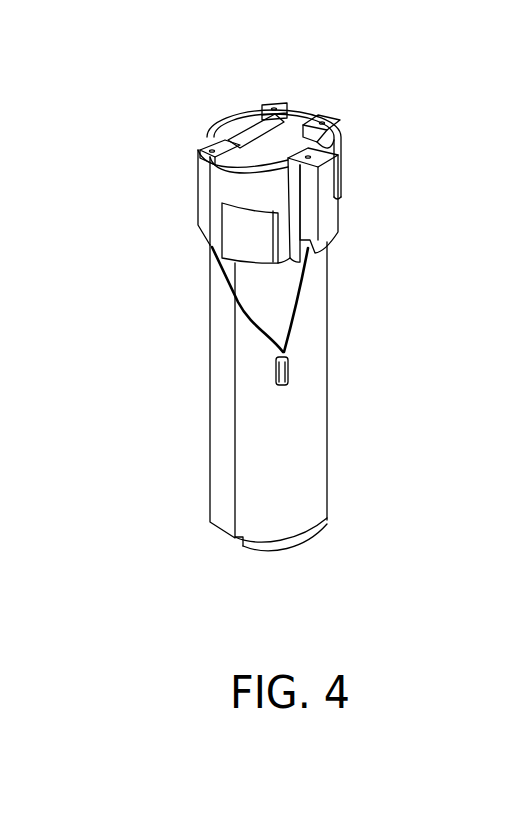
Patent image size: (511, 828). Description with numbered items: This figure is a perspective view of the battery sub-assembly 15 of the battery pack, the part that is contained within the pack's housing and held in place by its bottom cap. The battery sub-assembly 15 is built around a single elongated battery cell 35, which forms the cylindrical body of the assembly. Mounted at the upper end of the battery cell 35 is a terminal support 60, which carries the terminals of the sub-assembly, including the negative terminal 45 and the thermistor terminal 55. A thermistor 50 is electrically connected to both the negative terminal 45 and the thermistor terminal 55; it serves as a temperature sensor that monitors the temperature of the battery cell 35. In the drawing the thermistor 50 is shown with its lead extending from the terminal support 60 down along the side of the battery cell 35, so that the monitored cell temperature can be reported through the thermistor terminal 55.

The battery sub-assembly 15 is at (118, 284).
The battery cell 35 is at (310, 473).
The negative terminal 45 is at (318, 117).
The thermistor 50 is at (210, 148).
The thermistor terminal 55 is at (327, 177).
The terminal support 60 is at (335, 197).